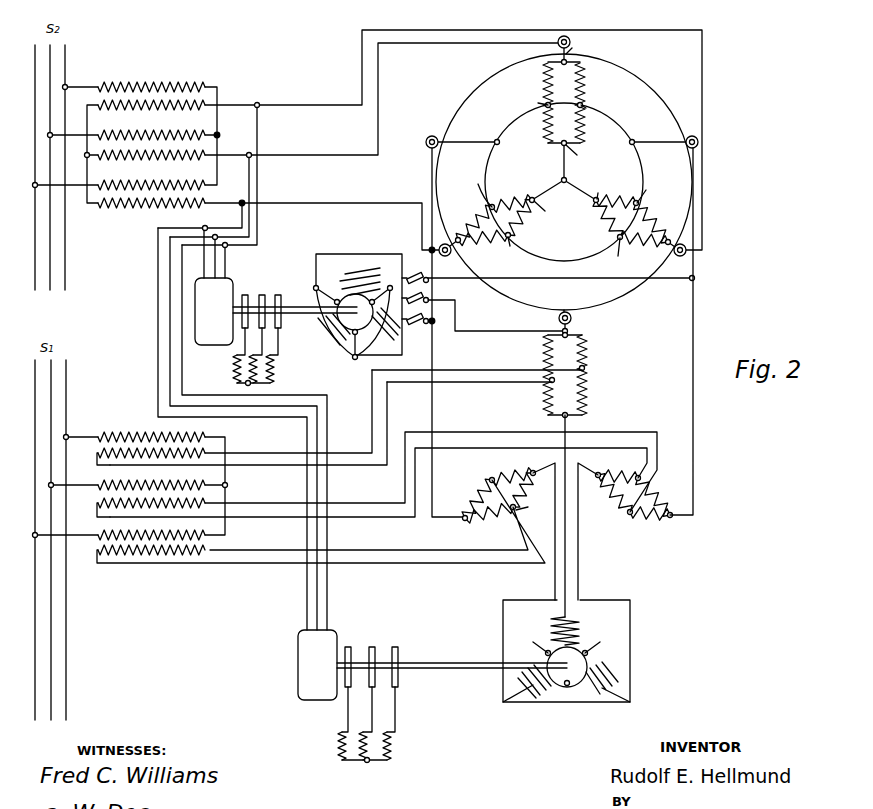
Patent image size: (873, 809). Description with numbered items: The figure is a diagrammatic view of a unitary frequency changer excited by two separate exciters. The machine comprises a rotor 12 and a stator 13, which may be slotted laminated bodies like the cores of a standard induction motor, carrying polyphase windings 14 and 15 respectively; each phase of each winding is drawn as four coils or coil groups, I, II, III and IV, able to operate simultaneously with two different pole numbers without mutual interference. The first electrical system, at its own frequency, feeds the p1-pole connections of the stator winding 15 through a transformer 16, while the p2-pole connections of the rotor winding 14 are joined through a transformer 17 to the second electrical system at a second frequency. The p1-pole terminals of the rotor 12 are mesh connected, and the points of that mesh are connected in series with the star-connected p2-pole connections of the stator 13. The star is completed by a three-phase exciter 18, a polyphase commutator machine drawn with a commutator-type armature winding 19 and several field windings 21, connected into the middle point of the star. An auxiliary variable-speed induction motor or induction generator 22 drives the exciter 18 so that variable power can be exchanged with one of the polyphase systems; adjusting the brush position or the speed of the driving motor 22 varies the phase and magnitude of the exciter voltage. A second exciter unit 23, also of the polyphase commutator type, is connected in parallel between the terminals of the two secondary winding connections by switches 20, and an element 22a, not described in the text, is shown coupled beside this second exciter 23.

The rotor 12 is at (676, 96).
The stator 13 is at (640, 408).
The rotor polyphase winding 14 is at (600, 85).
The stator polyphase winding 15 is at (588, 354).
The transformer 16 is at (167, 562).
The transformer 17 is at (165, 143).
The three-phase exciter 18 is at (612, 636).
The armature winding 19 is at (572, 690).
The switches 20 is at (422, 323).
The field windings 21 is at (600, 668).
The auxiliary variable-speed induction motor 22 is at (322, 679).
The controller 22a is at (276, 332).
The second exciter unit 23 is at (336, 280).